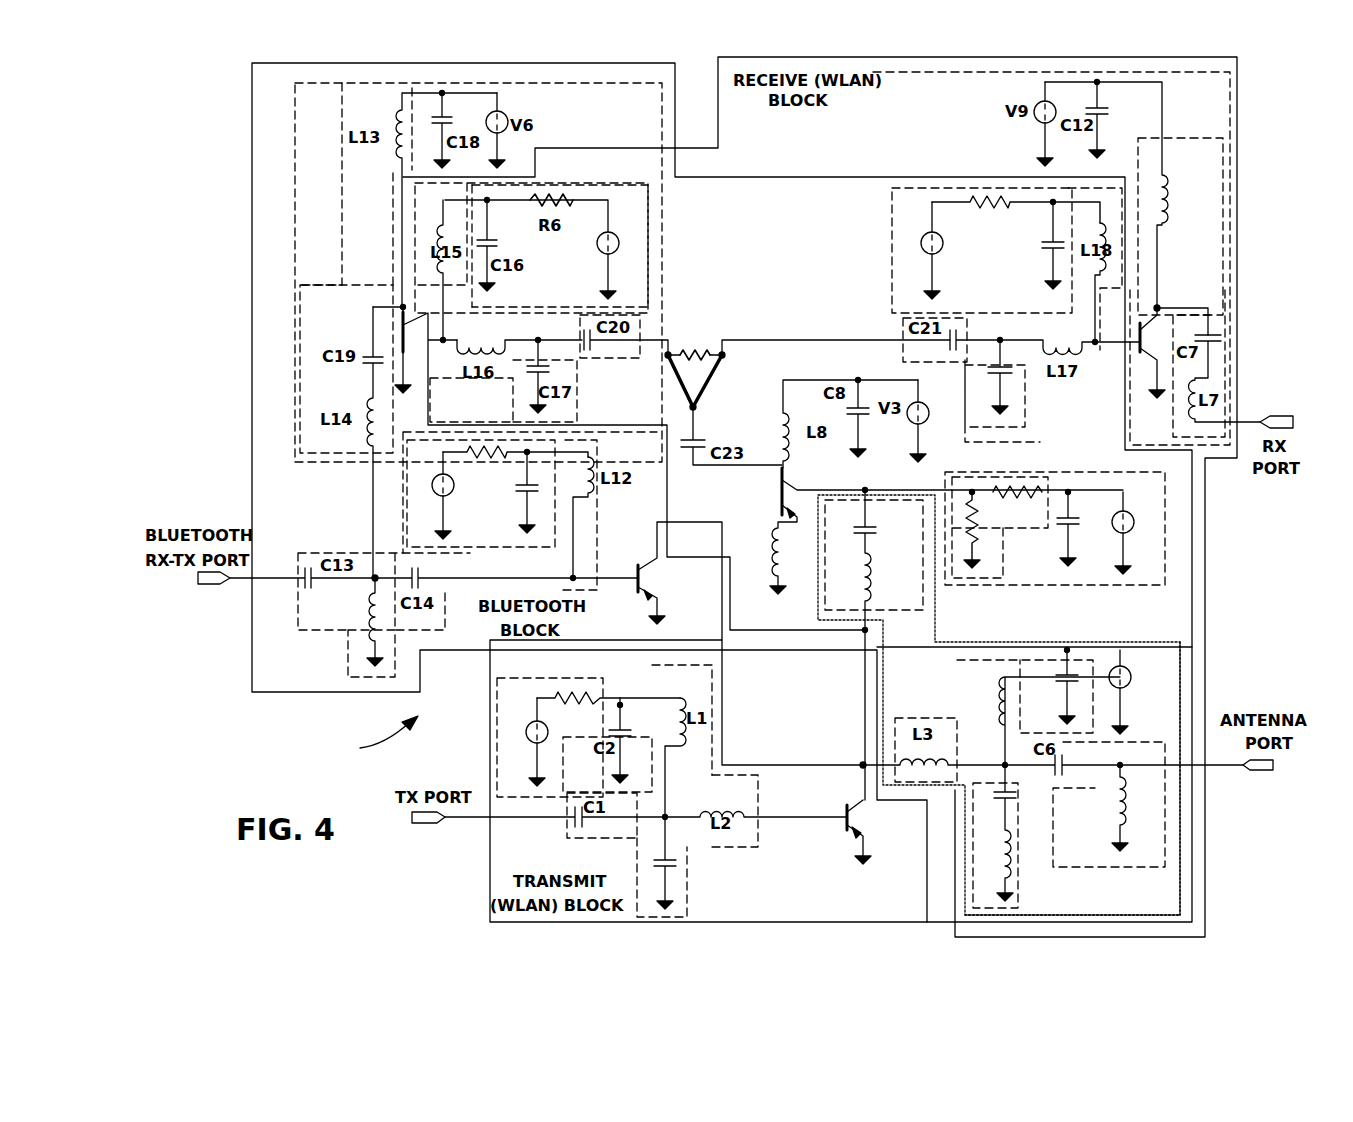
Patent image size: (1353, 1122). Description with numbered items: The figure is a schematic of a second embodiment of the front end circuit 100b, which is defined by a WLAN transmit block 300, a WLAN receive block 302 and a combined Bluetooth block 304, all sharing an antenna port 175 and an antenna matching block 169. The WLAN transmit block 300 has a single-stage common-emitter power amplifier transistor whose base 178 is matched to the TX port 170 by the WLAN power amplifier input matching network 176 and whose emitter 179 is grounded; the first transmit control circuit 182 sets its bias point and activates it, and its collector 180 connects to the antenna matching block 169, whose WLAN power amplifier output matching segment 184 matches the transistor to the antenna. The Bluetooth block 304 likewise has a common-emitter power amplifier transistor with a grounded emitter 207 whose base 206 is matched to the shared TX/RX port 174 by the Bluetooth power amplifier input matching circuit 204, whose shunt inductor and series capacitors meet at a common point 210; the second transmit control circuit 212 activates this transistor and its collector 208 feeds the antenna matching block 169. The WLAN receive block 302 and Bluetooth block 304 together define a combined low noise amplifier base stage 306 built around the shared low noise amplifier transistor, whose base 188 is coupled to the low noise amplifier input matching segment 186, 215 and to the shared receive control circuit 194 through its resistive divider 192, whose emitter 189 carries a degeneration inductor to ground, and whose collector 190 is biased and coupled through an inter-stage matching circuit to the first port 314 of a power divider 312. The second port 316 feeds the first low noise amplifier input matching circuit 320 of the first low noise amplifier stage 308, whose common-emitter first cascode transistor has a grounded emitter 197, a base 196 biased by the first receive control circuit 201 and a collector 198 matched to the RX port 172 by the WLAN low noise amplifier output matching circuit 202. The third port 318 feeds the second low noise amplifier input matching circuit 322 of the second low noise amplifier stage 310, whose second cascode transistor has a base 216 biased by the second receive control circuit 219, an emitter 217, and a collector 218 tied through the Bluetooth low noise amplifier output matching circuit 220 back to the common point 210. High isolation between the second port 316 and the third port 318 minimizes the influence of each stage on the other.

The front end circuit 100b is at (356, 738).
The antenna matching block 169 is at (1180, 672).
The WLAN transmit port 170 is at (430, 825).
The WLAN receive port 172 is at (1280, 413).
The shared transmit/receive port 174 is at (216, 586).
The antenna port 175 is at (1266, 774).
The WLAN power amplifier input matching network 176 is at (690, 889).
The base of transistor Q1 178 is at (828, 819).
The emitter of transistor Q1 179 is at (866, 843).
The collector of transistor Q1 180 is at (862, 780).
The first transmit control circuit 182 is at (497, 762).
The WLAN power amplifier output matching segment 184 is at (1035, 893).
The WLAN low noise amplifier input matching segment 186 is at (940, 600).
The base of shared low noise amplifier transistor Q2 188 is at (807, 516).
The emitter of shared low noise amplifier transistor Q2 189 is at (780, 515).
The collector of shared low noise amplifier transistor Q2 190 is at (796, 475).
The resistive divider 192 is at (1024, 529).
The shared receive control circuit 194 is at (1123, 587).
The base of first cascode transistor Q3 196 is at (1112, 345).
The emitter of transistor Q3 197 is at (1160, 372).
The collector of transistor Q3 198 is at (1160, 307).
The first receive control circuit 201 is at (1025, 312).
The WLAN low noise amplifier output matching circuit 202 is at (1225, 286).
The Bluetooth power amplifier input matching circuit 204 is at (322, 631).
The base of transistor Q5 206 is at (612, 573).
The emitter of transistor Q5 207 is at (655, 602).
The collector of transistor Q5 208 is at (655, 542).
The common point 210 is at (375, 576).
The second transmit control circuit 212 is at (478, 548).
The Bluetooth low noise amplifier input matching segment 215 is at (999, 705).
The base of second cascode transistor Q4 216 is at (445, 368).
The emitter of second cascode transistor Q4 217 is at (400, 347).
The collector of second cascode transistor Q4 218 is at (398, 307).
The second receive control circuit 219 is at (545, 312).
The Bluetooth low noise amplifier output matching circuit 220 is at (350, 223).
The WLAN transmit block 300 is at (490, 898).
The WLAN receive block 302 is at (1238, 249).
The combined Bluetooth block 304 is at (468, 651).
The combined low noise amplifier base stage 306 is at (1176, 546).
The first low noise amplifier stage 308 is at (1232, 127).
The second low noise amplifier stage 310 is at (295, 100).
The power divider 312 is at (696, 345).
The first port of power divider 314 is at (697, 408).
The second port of power divider 316 is at (726, 354).
The third port of power divider 318 is at (665, 362).
The first low noise amplifier input matching circuit 320 is at (1022, 402).
The second low noise amplifier input matching circuit 322 is at (498, 383).